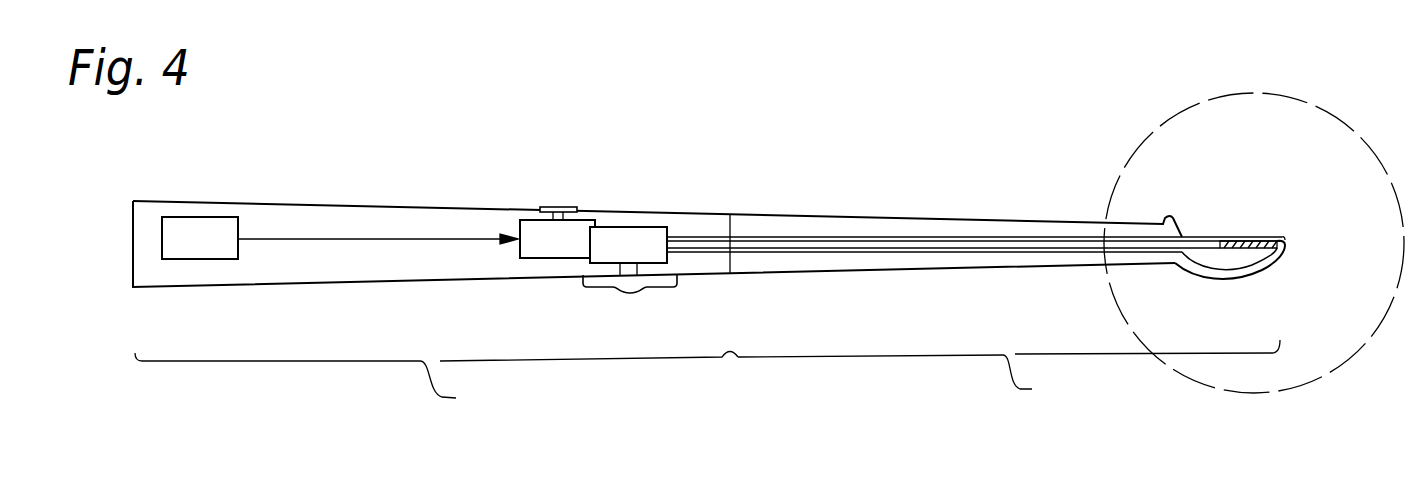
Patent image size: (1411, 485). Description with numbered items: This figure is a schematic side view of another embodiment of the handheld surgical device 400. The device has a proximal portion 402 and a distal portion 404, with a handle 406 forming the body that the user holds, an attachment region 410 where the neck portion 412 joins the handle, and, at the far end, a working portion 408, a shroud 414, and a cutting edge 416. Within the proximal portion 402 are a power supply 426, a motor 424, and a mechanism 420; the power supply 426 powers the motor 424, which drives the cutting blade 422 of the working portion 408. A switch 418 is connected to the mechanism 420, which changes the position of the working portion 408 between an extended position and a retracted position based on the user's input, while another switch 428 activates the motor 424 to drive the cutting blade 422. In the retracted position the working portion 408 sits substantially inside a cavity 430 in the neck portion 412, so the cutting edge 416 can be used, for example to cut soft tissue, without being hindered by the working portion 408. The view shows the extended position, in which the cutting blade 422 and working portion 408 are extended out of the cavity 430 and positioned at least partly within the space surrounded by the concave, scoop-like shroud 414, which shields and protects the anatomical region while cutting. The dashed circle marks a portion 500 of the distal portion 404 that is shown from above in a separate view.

The handheld surgical device 400 is at (748, 238).
The proximal portion 402 is at (436, 383).
The distal portion 404 is at (1009, 372).
The handle 406 is at (313, 205).
The working portion 408 is at (1260, 242).
The attachment region 410 is at (730, 214).
The neck portion 412 is at (867, 217).
The shroud 414 is at (1247, 274).
The cutting edge 416 is at (1283, 240).
The switch 418 is at (632, 295).
The mechanism 420 is at (650, 252).
The cutting blade 422 is at (1240, 240).
The motor 424 is at (580, 249).
The power supply 426 is at (222, 251).
The switch 428 is at (552, 207).
The cavity 430 is at (999, 252).
The portion 500 is at (1215, 388).